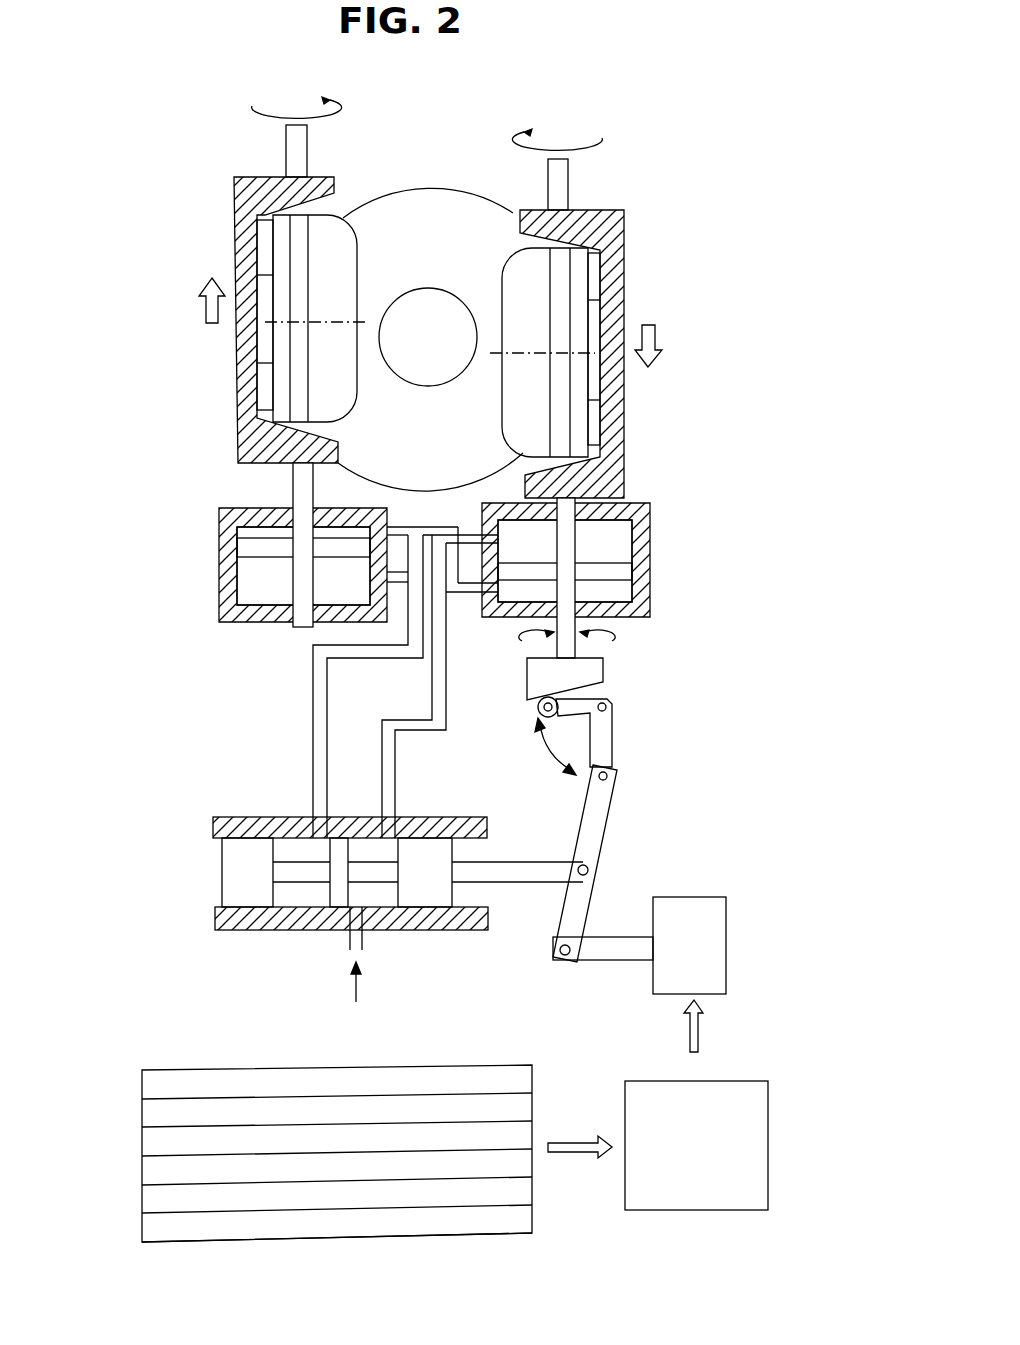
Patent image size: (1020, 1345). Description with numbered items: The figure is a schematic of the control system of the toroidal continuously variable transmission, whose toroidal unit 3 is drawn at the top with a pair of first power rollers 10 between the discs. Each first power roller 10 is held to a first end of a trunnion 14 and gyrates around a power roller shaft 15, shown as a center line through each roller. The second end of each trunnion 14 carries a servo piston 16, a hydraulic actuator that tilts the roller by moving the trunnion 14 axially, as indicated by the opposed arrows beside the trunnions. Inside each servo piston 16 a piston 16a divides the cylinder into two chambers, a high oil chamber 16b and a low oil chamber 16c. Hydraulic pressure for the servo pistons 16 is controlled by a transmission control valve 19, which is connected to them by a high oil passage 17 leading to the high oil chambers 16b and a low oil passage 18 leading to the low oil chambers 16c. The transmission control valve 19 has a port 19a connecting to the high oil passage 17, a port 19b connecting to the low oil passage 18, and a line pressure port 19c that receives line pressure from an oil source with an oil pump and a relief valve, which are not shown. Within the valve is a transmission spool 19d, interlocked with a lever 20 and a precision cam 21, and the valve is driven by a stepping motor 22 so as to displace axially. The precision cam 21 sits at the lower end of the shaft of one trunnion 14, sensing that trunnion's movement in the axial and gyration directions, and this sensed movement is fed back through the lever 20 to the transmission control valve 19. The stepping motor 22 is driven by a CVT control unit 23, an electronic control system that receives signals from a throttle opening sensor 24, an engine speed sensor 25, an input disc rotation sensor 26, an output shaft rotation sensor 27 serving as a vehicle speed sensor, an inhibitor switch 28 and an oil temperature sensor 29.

The toroidal continuously variable transmission unit 3 is at (415, 195).
The first power roller 10 is at (510, 285).
The trunnion 14 is at (234, 402).
The power roller shaft 15 is at (366, 320).
The servo piston 16 is at (212, 521).
The piston 16a is at (268, 549).
The high oil chamber 16b is at (330, 530).
The low oil chamber 16c is at (512, 527).
The high oil passage 17 is at (313, 705).
The low oil passage 18 is at (447, 690).
The transmission control valve 19 is at (222, 810).
The port 19a is at (318, 823).
The port 19b is at (393, 823).
The line pressure port 19c is at (362, 942).
The transmission spool 19d is at (233, 880).
The lever 20 is at (612, 735).
The precision cam 21 is at (603, 665).
The stepping motor 22 is at (690, 897).
The CVT control unit 23 is at (743, 1081).
The throttle opening sensor 24 is at (142, 1085).
The engine speed sensor 25 is at (142, 1113).
The input disc rotation sensor 26 is at (142, 1141).
The output shaft rotation sensor 27 is at (142, 1170).
The inhibitor switch 28 is at (142, 1198).
The oil temperature sensor 29 is at (142, 1226).